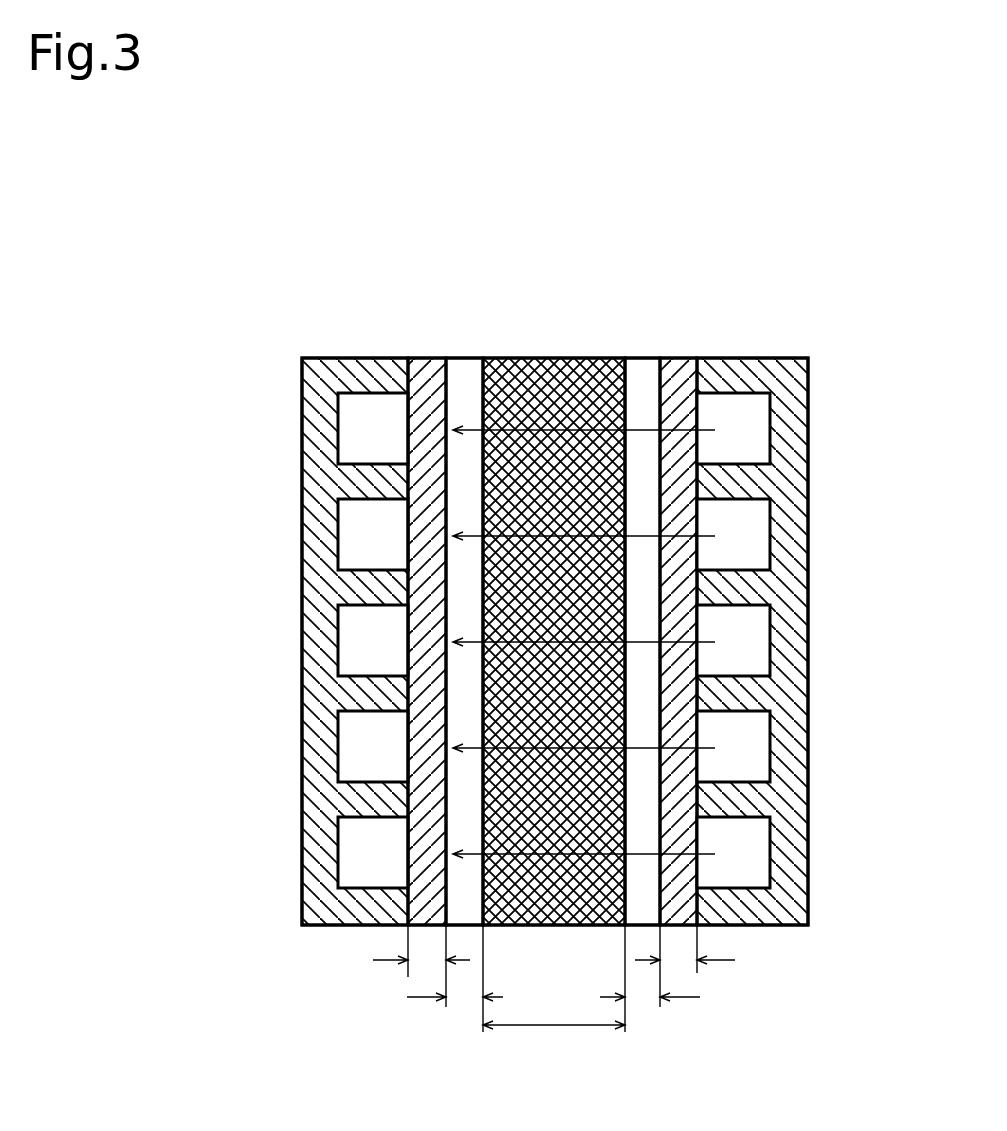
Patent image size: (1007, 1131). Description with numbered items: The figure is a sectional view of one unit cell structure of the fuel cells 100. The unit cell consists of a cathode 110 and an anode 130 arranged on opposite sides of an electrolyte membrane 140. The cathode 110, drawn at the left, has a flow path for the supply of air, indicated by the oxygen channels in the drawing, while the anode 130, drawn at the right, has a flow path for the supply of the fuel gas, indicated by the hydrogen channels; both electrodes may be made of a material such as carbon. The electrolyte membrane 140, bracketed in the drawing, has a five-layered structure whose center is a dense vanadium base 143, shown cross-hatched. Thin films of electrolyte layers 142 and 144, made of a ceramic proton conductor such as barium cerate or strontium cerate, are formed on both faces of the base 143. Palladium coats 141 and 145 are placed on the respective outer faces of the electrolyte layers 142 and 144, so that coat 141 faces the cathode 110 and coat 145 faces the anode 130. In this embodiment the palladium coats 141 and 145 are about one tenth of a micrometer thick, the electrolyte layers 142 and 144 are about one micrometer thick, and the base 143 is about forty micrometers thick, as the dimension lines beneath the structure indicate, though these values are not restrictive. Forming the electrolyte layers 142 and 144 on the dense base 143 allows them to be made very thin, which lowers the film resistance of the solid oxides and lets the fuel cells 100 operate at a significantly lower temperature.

The fuel cells 100 is at (811, 237).
The cathode 110 is at (331, 358).
The anode 130 is at (741, 358).
The electrolyte membrane 140 is at (700, 290).
The palladium coat 141 is at (421, 358).
The electrolyte layer 142 is at (463, 358).
The base 143 is at (576, 338).
The electrolyte layer 144 is at (641, 358).
The palladium coat 145 is at (681, 358).